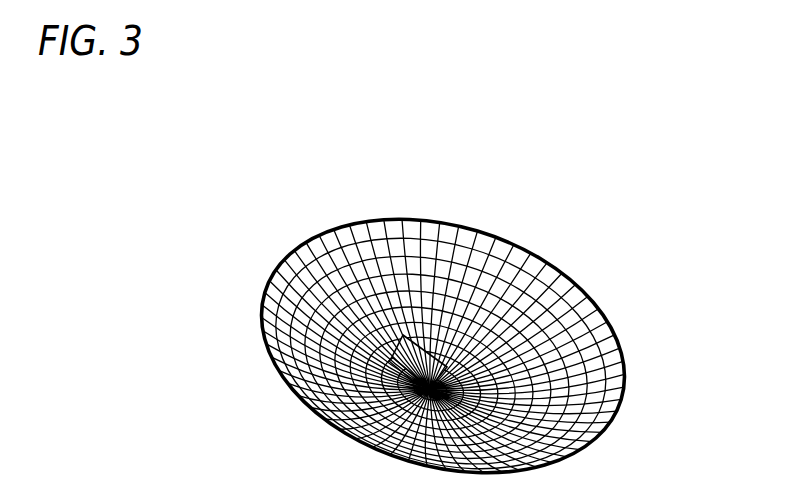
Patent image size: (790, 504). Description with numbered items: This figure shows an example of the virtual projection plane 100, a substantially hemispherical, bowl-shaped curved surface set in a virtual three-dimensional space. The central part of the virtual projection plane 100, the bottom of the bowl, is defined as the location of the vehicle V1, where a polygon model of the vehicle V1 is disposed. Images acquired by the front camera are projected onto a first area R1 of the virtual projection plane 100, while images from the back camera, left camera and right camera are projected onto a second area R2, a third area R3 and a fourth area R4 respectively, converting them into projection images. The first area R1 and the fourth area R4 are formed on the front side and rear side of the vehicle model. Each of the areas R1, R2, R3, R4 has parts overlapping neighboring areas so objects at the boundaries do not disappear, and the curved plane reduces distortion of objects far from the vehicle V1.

The virtual projection plane 100 is at (707, 286).
The first area R1 is at (344, 222).
The second area R2 is at (628, 393).
The third area R3 is at (312, 397).
The fourth area R4 is at (556, 266).
The vehicle V1 is at (284, 263).